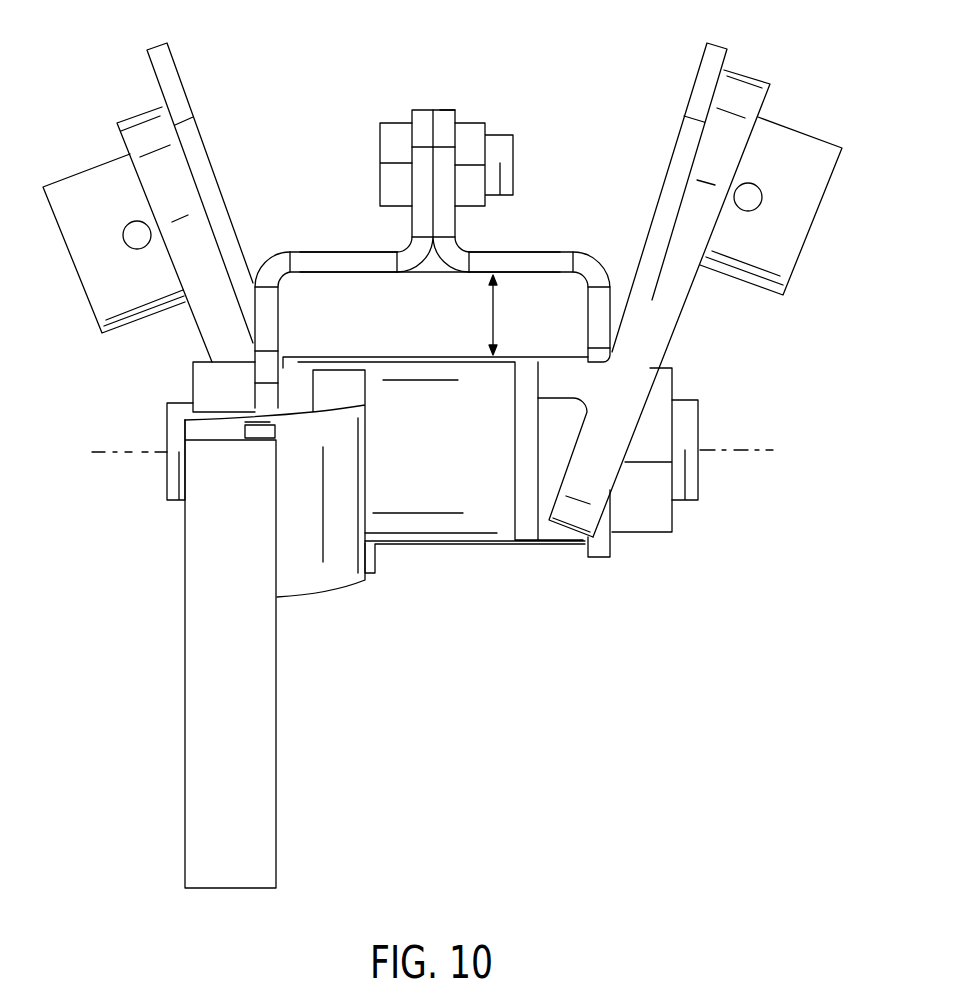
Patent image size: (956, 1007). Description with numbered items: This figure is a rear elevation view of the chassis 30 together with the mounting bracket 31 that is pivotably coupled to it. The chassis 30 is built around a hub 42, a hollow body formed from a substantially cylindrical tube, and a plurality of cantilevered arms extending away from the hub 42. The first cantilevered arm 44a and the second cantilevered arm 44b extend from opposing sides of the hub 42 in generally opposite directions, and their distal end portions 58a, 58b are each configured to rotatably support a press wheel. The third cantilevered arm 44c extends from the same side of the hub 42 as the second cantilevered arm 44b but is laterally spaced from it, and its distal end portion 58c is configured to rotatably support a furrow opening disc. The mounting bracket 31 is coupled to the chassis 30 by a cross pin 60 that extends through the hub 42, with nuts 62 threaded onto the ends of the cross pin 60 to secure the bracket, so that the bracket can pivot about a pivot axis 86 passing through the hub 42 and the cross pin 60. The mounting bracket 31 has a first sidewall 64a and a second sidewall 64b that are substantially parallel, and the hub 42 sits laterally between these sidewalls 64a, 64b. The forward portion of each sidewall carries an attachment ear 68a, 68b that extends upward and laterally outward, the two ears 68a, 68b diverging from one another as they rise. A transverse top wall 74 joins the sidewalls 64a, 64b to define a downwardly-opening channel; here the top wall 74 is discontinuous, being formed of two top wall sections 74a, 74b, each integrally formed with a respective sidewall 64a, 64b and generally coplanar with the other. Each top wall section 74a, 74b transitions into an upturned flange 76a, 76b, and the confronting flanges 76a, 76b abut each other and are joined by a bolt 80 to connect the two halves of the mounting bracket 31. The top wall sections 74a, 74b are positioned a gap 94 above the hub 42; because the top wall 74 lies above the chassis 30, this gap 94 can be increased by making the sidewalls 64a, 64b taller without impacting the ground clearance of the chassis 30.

The chassis 30 is at (660, 342).
The mounting bracket 31 is at (495, 250).
The hub 42 is at (475, 523).
The first cantilevered arm 44a is at (202, 317).
The second cantilevered arm 44b is at (677, 297).
The third cantilevered arm 44c is at (317, 578).
The distal end portion of the first cantilevered arm 58a is at (143, 115).
The distal end portion of the second cantilevered arm 58b is at (748, 70).
The distal end portion of the third cantilevered arm 58c is at (200, 702).
The cross pin 60 is at (167, 480).
The nuts 62 is at (203, 388).
The first sidewall 64a is at (263, 307).
The second sidewall 64b is at (603, 307).
The attachment ear 68a is at (182, 78).
The attachment ear 68b is at (699, 74).
The top wall 74 is at (372, 288).
The first top wall section 74a is at (343, 252).
The second top wall section 74b is at (550, 252).
The first flange 76a is at (420, 113).
The second flange 76b is at (445, 113).
The bolt 80 is at (390, 140).
The pivot axis 86 is at (130, 452).
The gap 94 is at (493, 315).